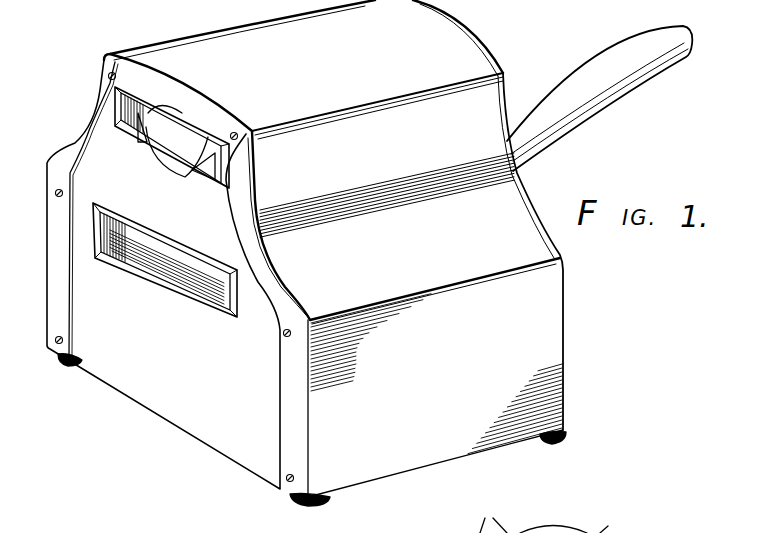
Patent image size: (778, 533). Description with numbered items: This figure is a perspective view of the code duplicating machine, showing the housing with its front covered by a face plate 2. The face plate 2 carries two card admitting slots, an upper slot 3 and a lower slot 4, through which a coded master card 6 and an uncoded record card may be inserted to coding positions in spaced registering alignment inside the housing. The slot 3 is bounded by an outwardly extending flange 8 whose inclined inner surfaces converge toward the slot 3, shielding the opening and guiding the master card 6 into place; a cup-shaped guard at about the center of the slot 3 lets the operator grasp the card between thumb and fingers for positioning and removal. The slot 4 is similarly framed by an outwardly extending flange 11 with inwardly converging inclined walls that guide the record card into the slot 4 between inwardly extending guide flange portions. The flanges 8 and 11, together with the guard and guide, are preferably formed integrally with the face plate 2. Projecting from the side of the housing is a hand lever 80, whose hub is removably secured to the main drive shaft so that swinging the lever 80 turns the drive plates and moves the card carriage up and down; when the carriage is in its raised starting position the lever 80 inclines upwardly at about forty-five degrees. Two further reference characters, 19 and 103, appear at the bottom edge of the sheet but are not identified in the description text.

The face plate 2 is at (217, 445).
The card admitting slot 3 is at (20, 100).
The card admitting slot 4 is at (172, 248).
The outwardly extending flange 8 is at (225, 167).
The outwardly extending flange 11 is at (214, 295).
The hand lever 80 is at (580, 62).
The element 19 is at (491, 518).
The element 103 is at (573, 532).
The coded master card 6 is at (621, 525).